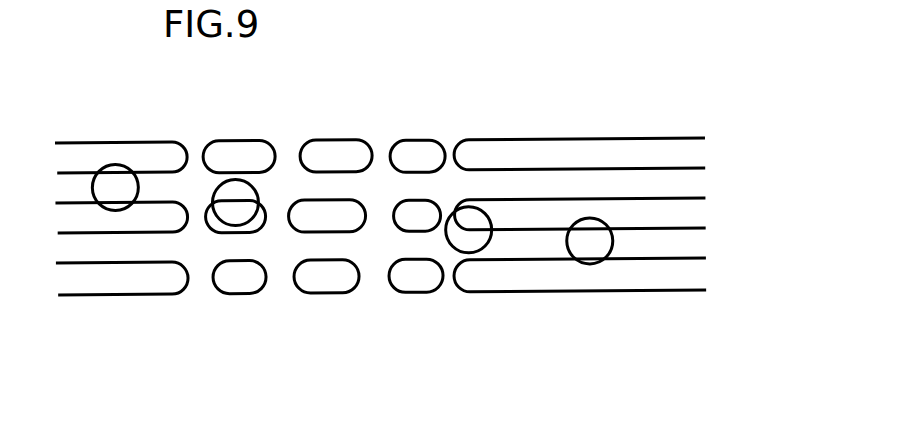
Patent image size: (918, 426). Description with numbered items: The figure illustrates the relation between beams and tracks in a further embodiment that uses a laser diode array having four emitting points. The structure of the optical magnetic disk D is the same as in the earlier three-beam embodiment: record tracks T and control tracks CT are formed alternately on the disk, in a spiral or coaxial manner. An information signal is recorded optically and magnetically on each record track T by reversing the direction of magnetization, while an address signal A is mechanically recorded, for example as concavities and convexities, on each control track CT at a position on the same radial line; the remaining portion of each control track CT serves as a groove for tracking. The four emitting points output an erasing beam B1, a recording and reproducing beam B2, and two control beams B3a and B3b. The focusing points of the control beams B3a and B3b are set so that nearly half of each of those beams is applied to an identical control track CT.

The record track T is at (70, 190).
The optical magnetic disk D is at (128, 303).
The address signal A is at (340, 300).
The control track CT is at (553, 142).
The erasing beam B1 is at (108, 165).
The recording and reproducing beam B2 is at (612, 243).
The control beam B3a is at (255, 190).
The control beam B3b is at (459, 243).